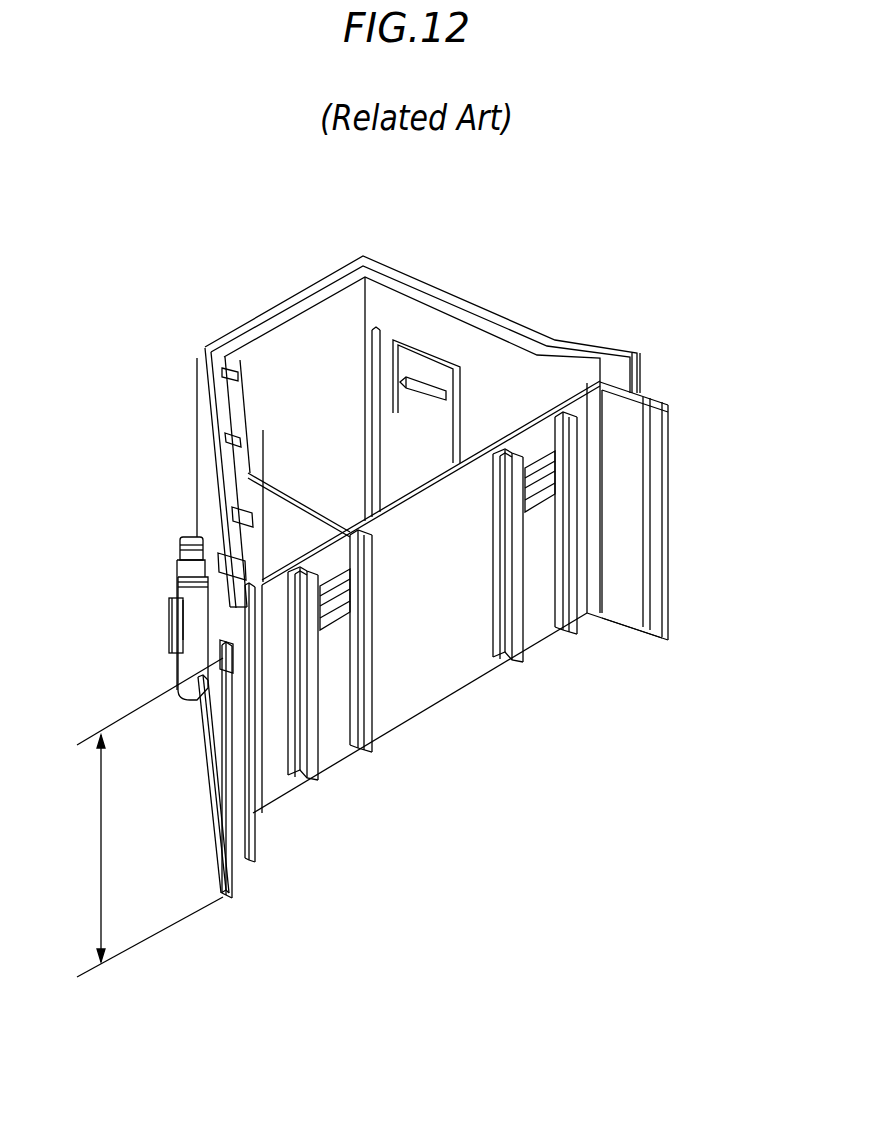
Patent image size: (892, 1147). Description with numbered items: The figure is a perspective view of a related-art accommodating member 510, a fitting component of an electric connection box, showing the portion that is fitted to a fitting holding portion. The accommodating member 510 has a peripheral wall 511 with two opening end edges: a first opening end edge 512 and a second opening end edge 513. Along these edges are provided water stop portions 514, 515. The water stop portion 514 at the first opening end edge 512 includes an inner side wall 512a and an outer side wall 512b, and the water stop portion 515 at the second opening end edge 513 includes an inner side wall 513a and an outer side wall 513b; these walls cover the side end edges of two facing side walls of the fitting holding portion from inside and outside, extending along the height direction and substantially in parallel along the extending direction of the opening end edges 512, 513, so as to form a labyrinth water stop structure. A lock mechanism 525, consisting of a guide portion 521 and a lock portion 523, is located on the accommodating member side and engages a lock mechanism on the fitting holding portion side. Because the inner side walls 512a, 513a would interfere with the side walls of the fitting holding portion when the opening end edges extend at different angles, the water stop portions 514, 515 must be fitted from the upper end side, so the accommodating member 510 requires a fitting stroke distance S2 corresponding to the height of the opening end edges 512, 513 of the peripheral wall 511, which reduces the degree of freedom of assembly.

The accommodating member 510 is at (428, 266).
The peripheral wall 511 is at (207, 492).
The first opening end edge 512 is at (225, 622).
The inner side wall 512a is at (252, 802).
The outer side wall 512b is at (230, 837).
The water stop portion 514 is at (347, 865).
The second opening end edge 513 is at (645, 388).
The inner side wall 513a is at (633, 520).
The outer side wall 513b is at (660, 470).
The water stop portion 515 is at (749, 447).
The guide portion 521 is at (518, 613).
The lock portion 523 is at (550, 498).
The lock mechanism 525 is at (676, 667).
The fitting stroke distance S2 is at (150, 817).